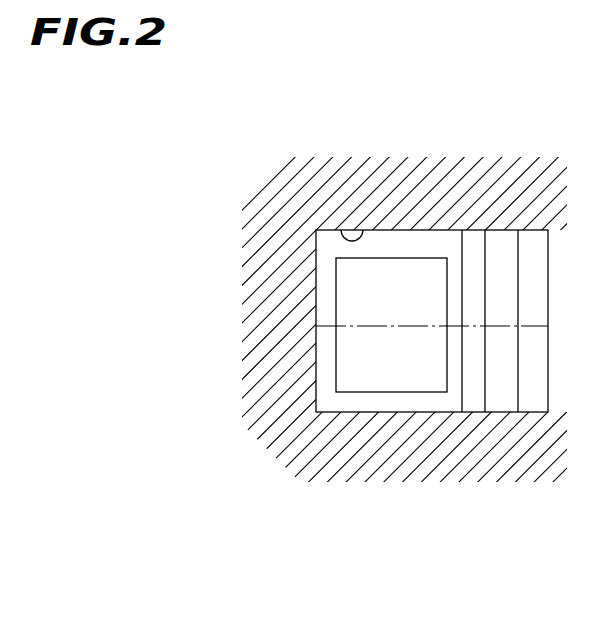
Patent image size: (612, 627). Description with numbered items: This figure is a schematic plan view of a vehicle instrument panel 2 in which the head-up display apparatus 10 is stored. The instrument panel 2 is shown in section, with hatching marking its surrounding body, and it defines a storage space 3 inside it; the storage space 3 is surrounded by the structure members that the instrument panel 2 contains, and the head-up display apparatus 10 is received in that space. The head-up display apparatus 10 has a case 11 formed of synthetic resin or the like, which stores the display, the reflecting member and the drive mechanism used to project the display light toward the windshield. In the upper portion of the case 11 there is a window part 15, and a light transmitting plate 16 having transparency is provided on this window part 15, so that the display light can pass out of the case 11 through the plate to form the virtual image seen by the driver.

The instrument panel 2 is at (502, 177).
The storage space 3 is at (364, 232).
The head-up display apparatus 10 is at (370, 412).
The case 11 is at (461, 413).
The window part 15 is at (340, 363).
The light transmitting plate 16 is at (350, 345).